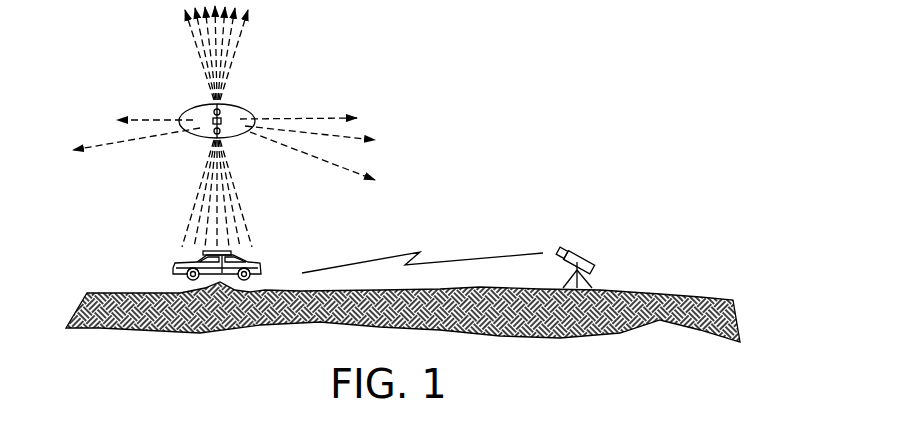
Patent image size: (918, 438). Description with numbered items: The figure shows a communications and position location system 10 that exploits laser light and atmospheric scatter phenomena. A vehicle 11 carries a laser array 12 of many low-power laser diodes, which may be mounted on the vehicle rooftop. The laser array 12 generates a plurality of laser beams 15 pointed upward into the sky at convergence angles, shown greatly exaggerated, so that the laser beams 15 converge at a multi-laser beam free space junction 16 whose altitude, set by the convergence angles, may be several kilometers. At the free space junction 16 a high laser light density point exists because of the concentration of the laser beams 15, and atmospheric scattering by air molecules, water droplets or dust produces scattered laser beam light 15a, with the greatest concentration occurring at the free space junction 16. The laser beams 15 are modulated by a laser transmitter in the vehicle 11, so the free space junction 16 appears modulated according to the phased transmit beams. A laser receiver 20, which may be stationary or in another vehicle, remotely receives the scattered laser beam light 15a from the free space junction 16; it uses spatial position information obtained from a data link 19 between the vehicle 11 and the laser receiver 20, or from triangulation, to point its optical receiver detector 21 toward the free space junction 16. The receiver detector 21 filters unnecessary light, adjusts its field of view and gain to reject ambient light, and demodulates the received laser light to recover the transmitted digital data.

The communications and position location system 10 is at (612, 110).
The vehicle 11 is at (262, 267).
The laser array 12 is at (240, 250).
The laser beams 15 is at (170, 215).
The scattered laser beam light 15a is at (145, 108).
The multi-laser beam free space junction 16 is at (264, 115).
The data link 19 is at (442, 260).
The laser receiver 20 is at (594, 258).
The optical receiver detector 21 is at (572, 251).